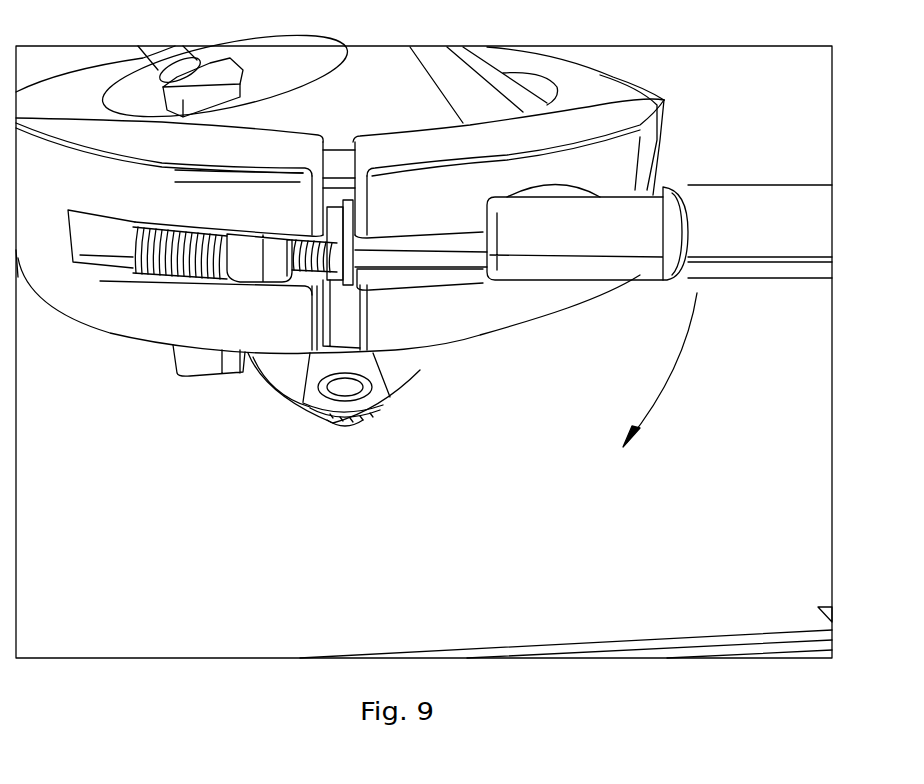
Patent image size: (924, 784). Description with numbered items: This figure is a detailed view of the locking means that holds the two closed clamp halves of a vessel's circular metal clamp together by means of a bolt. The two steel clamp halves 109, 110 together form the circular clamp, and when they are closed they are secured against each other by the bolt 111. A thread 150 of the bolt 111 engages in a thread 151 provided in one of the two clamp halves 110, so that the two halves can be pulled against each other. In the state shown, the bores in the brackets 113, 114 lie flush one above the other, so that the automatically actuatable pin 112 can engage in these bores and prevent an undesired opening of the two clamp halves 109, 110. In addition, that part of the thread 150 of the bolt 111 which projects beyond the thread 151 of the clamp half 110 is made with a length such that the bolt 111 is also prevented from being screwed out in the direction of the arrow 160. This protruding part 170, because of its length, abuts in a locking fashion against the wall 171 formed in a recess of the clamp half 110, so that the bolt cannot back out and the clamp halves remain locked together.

The clamp half 109 is at (613, 87).
The clamp half 110 is at (183, 187).
The bolt 111 is at (760, 250).
The pin 112 is at (340, 423).
The bracket 113 is at (367, 417).
The bracket 114 is at (403, 390).
The thread 150 is at (180, 250).
The thread 151 is at (253, 273).
The arrow 160 is at (677, 357).
The protruding part 170 is at (143, 272).
The wall 171 is at (107, 250).